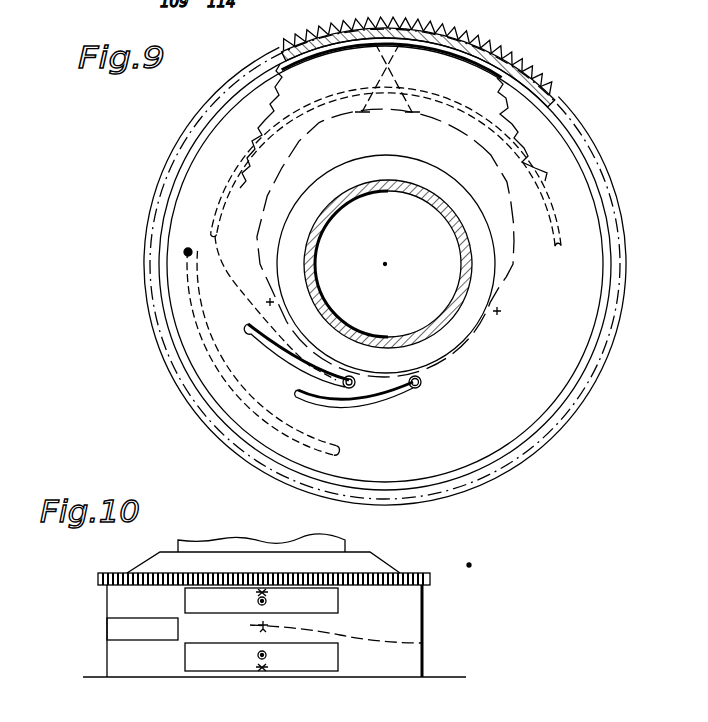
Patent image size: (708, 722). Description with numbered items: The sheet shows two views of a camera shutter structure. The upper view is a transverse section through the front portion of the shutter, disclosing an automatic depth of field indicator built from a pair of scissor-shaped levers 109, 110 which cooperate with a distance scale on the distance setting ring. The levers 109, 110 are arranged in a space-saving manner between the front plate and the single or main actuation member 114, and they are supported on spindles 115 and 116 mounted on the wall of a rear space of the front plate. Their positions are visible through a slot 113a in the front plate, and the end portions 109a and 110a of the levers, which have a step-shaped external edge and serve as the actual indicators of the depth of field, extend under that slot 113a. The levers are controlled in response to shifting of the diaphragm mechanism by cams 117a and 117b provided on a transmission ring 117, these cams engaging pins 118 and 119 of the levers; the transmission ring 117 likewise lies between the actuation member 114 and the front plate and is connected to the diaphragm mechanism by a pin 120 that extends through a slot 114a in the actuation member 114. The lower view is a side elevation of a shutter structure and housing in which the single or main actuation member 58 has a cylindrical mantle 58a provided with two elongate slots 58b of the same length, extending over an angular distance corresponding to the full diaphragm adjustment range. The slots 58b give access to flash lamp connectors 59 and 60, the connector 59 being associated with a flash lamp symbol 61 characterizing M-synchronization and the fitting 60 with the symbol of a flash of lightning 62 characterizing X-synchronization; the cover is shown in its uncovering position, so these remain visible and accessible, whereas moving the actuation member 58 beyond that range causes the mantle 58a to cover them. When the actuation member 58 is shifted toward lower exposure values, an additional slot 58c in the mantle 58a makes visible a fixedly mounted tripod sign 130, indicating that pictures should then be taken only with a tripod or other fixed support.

In FIG. 9, the lever 109 is at (530, 210).
In FIG. 9, the end portion of lever 109a is at (497, 78).
In FIG. 9, the lever 110 is at (253, 177).
In FIG. 9, the end portion of lever 110a is at (307, 72).
In FIG. 9, the slot 113a is at (222, 207).
In FIG. 9, the single or main actuation member 114 is at (490, 47).
In FIG. 9, the slot 114a is at (212, 362).
In FIG. 9, the spindle 115 is at (497, 311).
In FIG. 9, the spindle 116 is at (270, 302).
In FIG. 9, the transmission ring 117 is at (510, 417).
In FIG. 9, the cam 117a is at (372, 405).
In FIG. 9, the cam 117b is at (296, 358).
In FIG. 9, the pin 118 is at (415, 388).
In FIG. 9, the pin 119 is at (347, 385).
In FIG. 9, the pin 120 is at (184, 252).
In FIG. 10, the single or main actuation member 58 is at (400, 568).
In FIG. 10, the cylindrical mantle 58a is at (403, 612).
In FIG. 10, the elongate slots 58b is at (210, 655).
In FIG. 10, the additional slot 58c is at (135, 627).
In FIG. 10, the flash lamp connector 59 is at (268, 598).
In FIG. 10, the flash lamp connector 60 is at (270, 660).
In FIG. 10, the symbol 61 is at (262, 597).
In FIG. 10, the symbol of a flash of lightning 62 is at (267, 672).
In FIG. 10, the tripod sign 130 is at (422, 643).